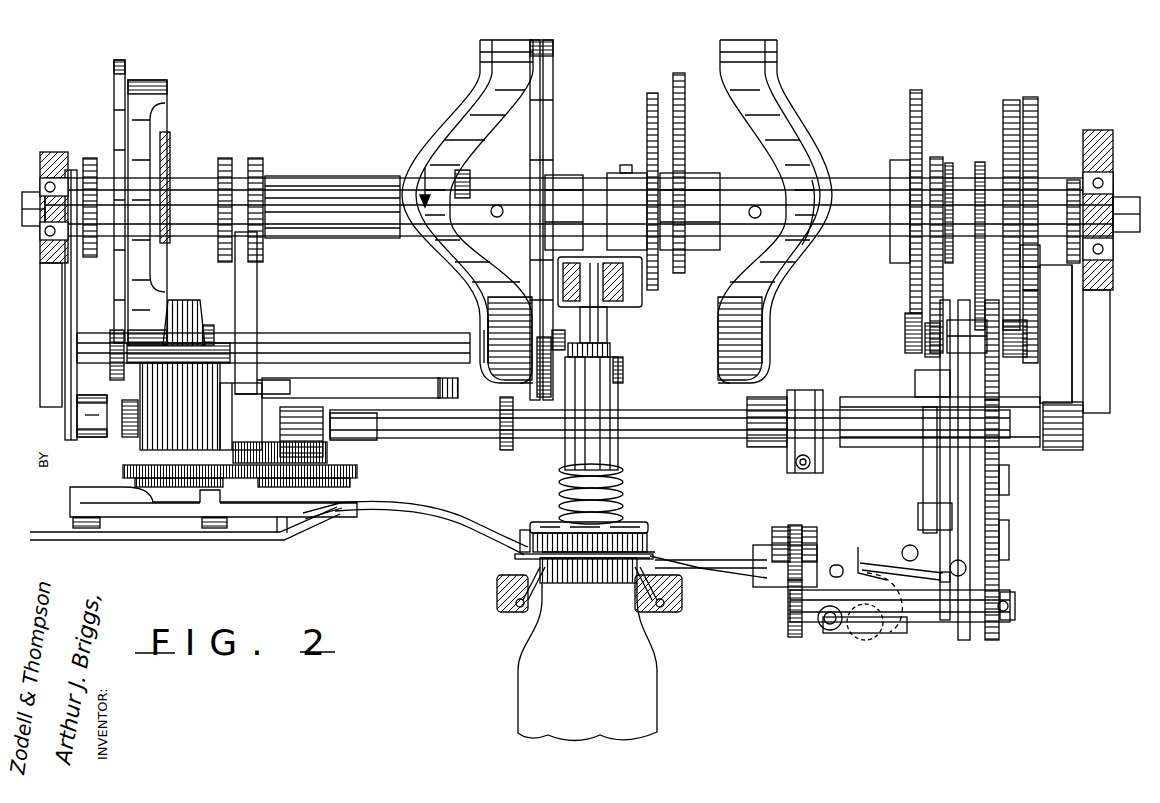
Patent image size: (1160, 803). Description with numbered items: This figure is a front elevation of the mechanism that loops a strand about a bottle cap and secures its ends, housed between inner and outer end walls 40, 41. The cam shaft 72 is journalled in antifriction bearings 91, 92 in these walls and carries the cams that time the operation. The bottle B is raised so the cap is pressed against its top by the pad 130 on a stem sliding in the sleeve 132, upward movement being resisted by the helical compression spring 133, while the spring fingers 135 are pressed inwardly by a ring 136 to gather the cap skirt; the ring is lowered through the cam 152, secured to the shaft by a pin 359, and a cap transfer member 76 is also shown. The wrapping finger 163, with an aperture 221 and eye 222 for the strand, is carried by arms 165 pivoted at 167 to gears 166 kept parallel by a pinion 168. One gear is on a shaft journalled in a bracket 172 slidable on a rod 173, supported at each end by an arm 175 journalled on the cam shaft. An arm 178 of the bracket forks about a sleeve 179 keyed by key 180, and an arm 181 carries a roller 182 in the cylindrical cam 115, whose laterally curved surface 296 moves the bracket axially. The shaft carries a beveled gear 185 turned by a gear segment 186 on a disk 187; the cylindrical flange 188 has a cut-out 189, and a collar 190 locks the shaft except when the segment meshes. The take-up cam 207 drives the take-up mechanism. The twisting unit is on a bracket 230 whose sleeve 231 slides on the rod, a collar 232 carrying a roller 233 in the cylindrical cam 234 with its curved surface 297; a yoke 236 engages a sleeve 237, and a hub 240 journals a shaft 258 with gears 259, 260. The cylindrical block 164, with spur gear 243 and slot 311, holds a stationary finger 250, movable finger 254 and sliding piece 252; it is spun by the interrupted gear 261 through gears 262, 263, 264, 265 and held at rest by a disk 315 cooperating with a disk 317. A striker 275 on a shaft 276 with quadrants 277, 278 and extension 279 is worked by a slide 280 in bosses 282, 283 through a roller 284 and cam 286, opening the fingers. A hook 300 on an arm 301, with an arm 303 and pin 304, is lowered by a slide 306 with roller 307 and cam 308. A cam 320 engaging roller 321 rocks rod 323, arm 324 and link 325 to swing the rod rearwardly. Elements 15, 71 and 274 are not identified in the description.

The clamp bar 15 is at (515, 558).
The inner end wall 40 is at (1110, 308).
The outer end wall 41 is at (42, 310).
The gear 71 is at (680, 76).
The cam shaft 72 is at (350, 236).
The complemental member 76 is at (514, 606).
The antifriction bearing 91 is at (1113, 182).
The antifriction bearing 92 is at (47, 185).
The cylindrical cam 115 is at (466, 285).
The pad 130 is at (648, 526).
The sleeve 132 is at (618, 393).
The helical compression spring 133 is at (621, 477).
The spring fingers 135 is at (497, 579).
The ring 136 is at (497, 597).
The cam 152 is at (652, 94).
The wrapping finger 163 is at (425, 518).
The cylindrical block 164 is at (783, 527).
The arms 165 is at (86, 490).
The gears 166 is at (125, 466).
The pivot 167 is at (100, 518).
The pinion 168 is at (280, 454).
The bracket 172 is at (262, 420).
The rod 173 is at (462, 440).
The arm 175 is at (66, 390).
The upwardly extending arm 178 is at (252, 303).
The sleeve 179 is at (240, 160).
The key 180 is at (308, 179).
The inwardly extending arm 181 is at (372, 396).
The roller 182 is at (448, 381).
The beveled gear 185 is at (190, 300).
The gear segment 186 is at (170, 160).
The disk 187 is at (152, 259).
The cylindrical flange 188 is at (160, 86).
The cut-out portion 189 is at (163, 114).
The collar 190 is at (208, 325).
The take-up cam 207 is at (88, 158).
The aperture 221 is at (318, 511).
The eye 222 is at (527, 530).
The bracket 230 is at (965, 501).
The elongated sleeve 231 is at (852, 400).
The collar 232 is at (798, 456).
The roller 233 is at (787, 392).
The cylindrical cam 234 is at (778, 136).
The yoke 236 is at (963, 203).
The sleeve 237 is at (980, 162).
The hub 240 is at (955, 622).
The spur gear 243 is at (800, 528).
The stationary finger piece 250 is at (712, 560).
The piece 252 is at (835, 565).
The movable finger piece 254 is at (715, 578).
The shaft 258 is at (1016, 607).
The gear 259 is at (790, 636).
The gear 260 is at (1006, 594).
The interrupted gear 261 is at (1010, 100).
The pinion 262 is at (1013, 358).
The gear 263 is at (998, 389).
The gear 264 is at (1000, 472).
The gear 265 is at (1000, 536).
The cam drum 274 is at (490, 313).
The striker member 275 is at (900, 631).
The shaft 276 is at (825, 632).
The gear quadrant 277 is at (858, 640).
The quadrant 278 is at (880, 641).
The extending portion 279 is at (940, 578).
The slide 280 is at (925, 455).
The boss 282 is at (918, 511).
The boss 283 is at (915, 384).
The roller 284 is at (925, 361).
The cam 286 is at (940, 157).
The laterally curved surface 296 is at (420, 157).
The laterally curved surface 297 is at (812, 192).
The hook 300 is at (860, 548).
The arm 301 is at (886, 563).
The arm 303 is at (910, 545).
The laterally extending pin 304 is at (950, 565).
The slide 306 is at (923, 481).
The roller 307 is at (905, 332).
The cam 308 is at (910, 290).
The slot 311 is at (768, 546).
The disk 315 is at (1032, 263).
The disk 317 is at (1040, 360).
The cam 320 is at (114, 77).
The roller 321 is at (118, 380).
The rod 323 is at (328, 341).
The downwardly depending arm 324 is at (537, 389).
The link 325 is at (508, 450).
The pin 359 is at (624, 166).
The bottle B is at (522, 669).